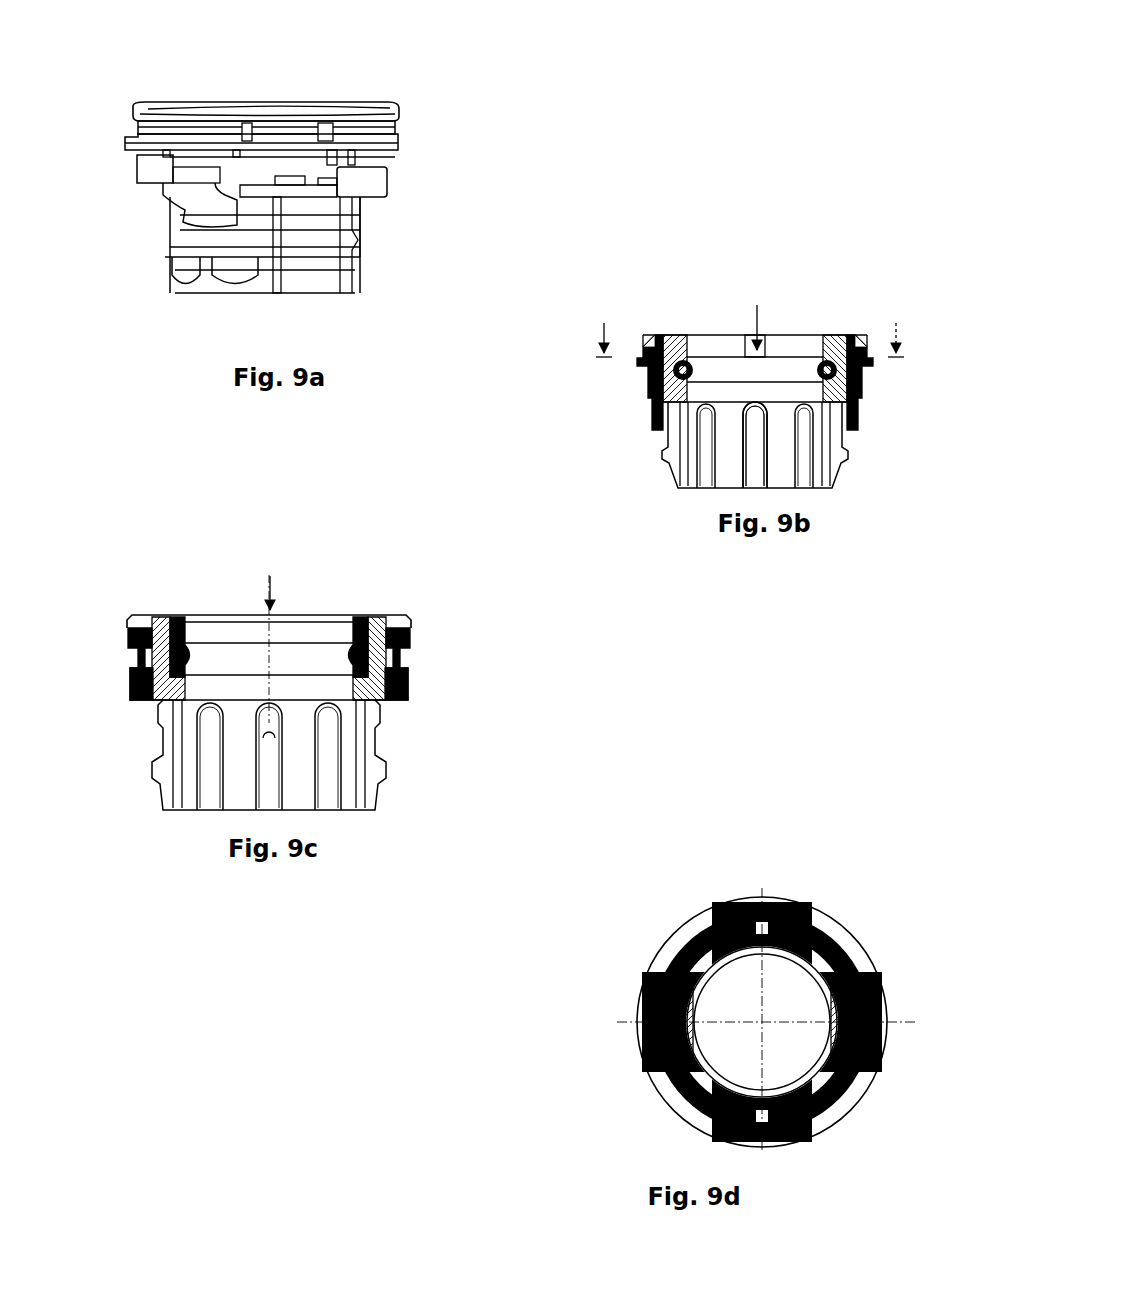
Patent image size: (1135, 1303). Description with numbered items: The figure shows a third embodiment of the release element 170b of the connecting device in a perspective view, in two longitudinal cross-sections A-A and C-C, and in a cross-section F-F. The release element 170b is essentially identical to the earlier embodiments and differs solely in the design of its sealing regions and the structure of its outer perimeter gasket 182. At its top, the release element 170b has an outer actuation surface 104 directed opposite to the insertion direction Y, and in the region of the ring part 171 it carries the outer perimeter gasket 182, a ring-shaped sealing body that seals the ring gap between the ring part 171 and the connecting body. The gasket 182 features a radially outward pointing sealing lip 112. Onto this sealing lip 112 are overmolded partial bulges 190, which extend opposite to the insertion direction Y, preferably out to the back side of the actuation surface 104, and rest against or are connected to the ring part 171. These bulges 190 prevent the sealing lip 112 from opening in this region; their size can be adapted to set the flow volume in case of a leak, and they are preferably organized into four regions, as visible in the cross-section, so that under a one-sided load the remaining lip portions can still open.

In FIG. 9A, the outer actuation surface 104 is at (207, 108).
In FIG. 9B, the outer actuation surface 104 is at (670, 337).
In FIG. 9C, the outer actuation surface 104 is at (400, 617).
In FIG. 9A, the sealing lip 112 is at (398, 148).
In FIG. 9B, the sealing lip 112 is at (647, 377).
In FIG. 9C, the sealing lip 112 is at (127, 655).
In FIG. 9A, the release element 170b is at (346, 168).
In FIG. 9B, the release element 170b is at (739, 351).
In FIG. 9C, the release element 170b is at (283, 645).
In FIG. 9D, the release element 170b is at (724, 1028).
In FIG. 9A, the ring part 171 is at (378, 112).
In FIG. 9B, the ring part 171 is at (815, 352).
In FIG. 9C, the ring part 171 is at (388, 622).
In FIG. 9D, the ring part 171 is at (668, 1023).
In FIG. 9B, the outer perimeter gasket 182 is at (690, 354).
In FIG. 9A, the bulges 190 is at (157, 142).
In FIG. 9B, the bulges 190 is at (645, 360).
In FIG. 9C, the bulges 190 is at (127, 642).
In FIG. 9D, the bulges 190 is at (782, 903).